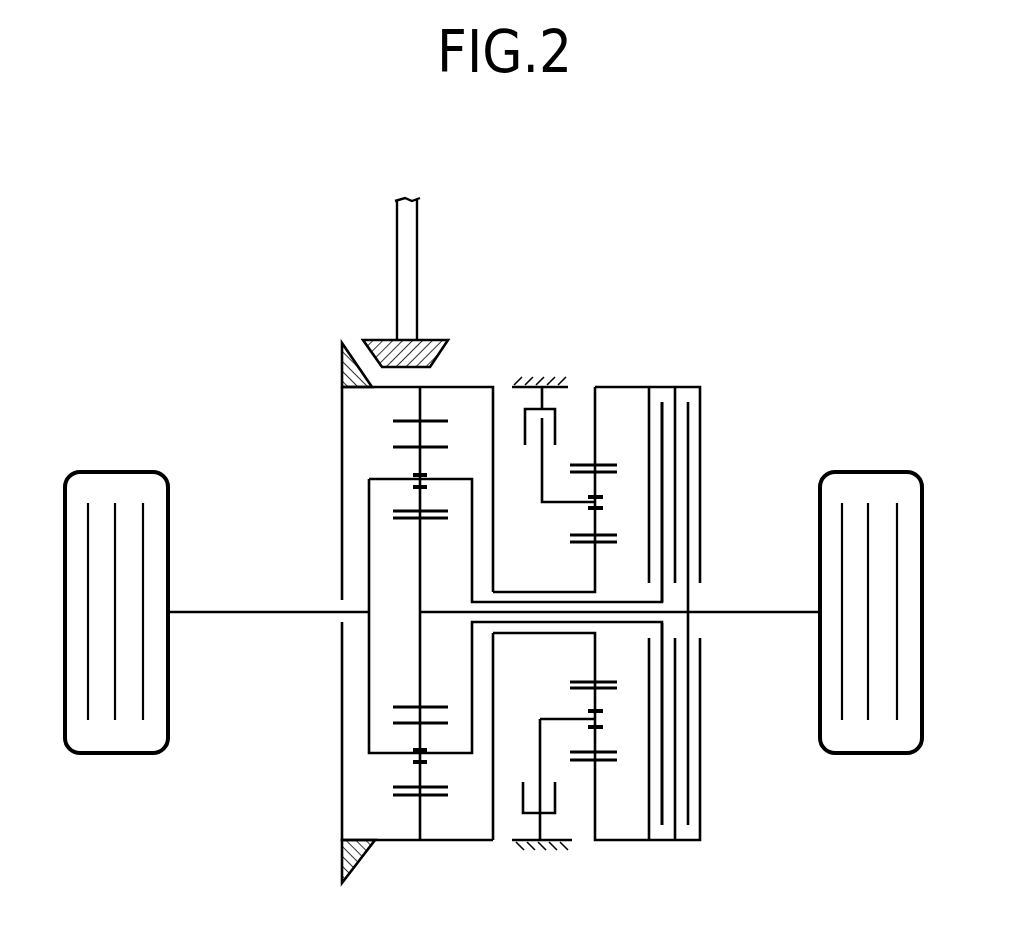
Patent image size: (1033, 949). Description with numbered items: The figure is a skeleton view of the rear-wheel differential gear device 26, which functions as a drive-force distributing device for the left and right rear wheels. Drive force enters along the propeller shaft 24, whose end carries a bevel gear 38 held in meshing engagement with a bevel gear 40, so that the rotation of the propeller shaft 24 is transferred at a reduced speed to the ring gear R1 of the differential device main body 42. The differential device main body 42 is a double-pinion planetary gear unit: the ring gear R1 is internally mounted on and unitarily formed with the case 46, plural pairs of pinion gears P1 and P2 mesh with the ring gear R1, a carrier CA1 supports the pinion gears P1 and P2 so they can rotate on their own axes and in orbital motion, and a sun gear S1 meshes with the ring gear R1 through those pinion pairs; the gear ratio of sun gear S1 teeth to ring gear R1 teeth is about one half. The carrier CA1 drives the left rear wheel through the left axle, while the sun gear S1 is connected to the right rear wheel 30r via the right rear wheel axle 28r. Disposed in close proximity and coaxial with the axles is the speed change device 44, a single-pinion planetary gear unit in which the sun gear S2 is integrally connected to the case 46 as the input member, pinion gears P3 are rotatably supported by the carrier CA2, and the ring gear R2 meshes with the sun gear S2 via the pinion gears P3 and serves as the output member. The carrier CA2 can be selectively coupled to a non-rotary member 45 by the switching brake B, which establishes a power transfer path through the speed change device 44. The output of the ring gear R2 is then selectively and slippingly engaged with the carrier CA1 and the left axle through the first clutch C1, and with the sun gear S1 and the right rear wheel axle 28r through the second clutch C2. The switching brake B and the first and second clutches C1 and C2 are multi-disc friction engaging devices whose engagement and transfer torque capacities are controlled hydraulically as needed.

The propeller shaft 24 is at (403, 331).
The rear-wheel differential gear device 26 is at (582, 198).
The right rear wheel axle 28r is at (771, 614).
The right rear wheel 30r is at (876, 733).
The bevel gear 38 is at (427, 343).
The bevel gear 40 is at (340, 371).
The differential device main body 42 is at (318, 502).
The speed change device 44 is at (583, 328).
The non-rotary member 45 is at (527, 384).
The case 46 is at (480, 386).
The ring gear R1 is at (400, 420).
The pinion gear P2 is at (400, 447).
The sun gear S1 is at (402, 520).
The carrier CA1 is at (369, 706).
The pinion gear P1 is at (405, 786).
The ring gear R2 is at (578, 462).
The pinion gear P3 is at (607, 477).
The carrier CA2 is at (562, 504).
The sun gear S2 is at (582, 682).
The switching brake B is at (544, 372).
The first clutch C1 is at (661, 858).
The second clutch C2 is at (696, 858).